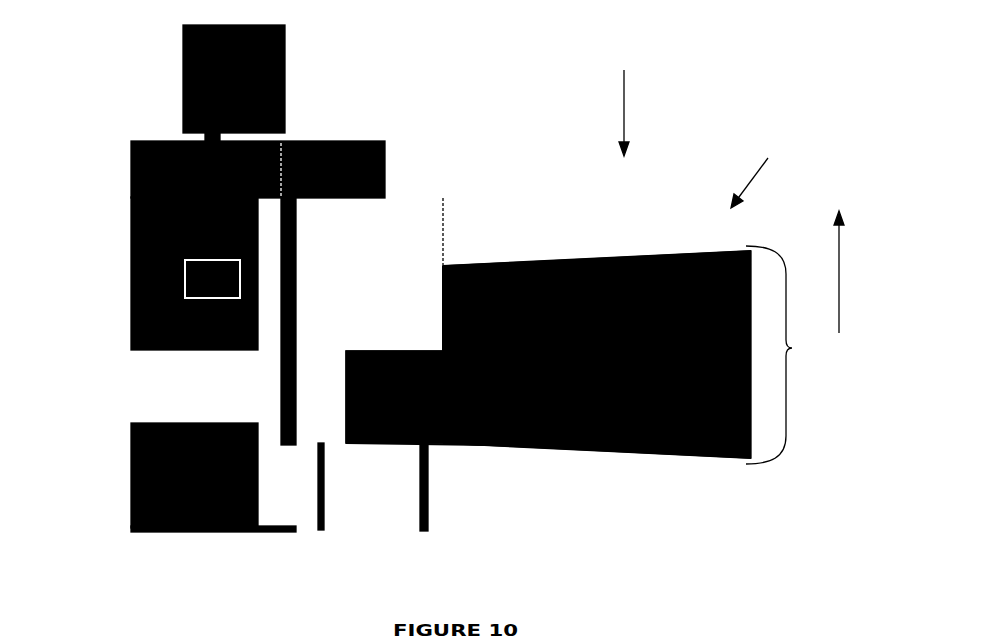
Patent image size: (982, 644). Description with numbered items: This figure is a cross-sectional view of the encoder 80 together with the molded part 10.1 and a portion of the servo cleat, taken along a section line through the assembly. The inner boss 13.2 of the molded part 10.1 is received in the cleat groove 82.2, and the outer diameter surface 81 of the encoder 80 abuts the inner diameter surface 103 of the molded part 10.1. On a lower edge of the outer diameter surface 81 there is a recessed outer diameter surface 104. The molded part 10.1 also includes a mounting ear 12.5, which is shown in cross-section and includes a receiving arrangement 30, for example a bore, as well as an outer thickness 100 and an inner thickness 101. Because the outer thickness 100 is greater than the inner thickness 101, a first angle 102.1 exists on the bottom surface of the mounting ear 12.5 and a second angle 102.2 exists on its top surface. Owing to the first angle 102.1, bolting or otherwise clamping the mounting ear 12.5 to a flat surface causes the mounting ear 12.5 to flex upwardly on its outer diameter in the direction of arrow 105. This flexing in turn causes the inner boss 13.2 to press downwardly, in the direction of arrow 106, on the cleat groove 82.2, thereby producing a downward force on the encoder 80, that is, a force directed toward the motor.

The encoder 80 is at (100, 111).
The inner thickness 101 is at (435, 282).
The outer diameter surface 81 is at (437, 220).
The mounting ear 12.5 is at (619, 101).
The molded part 10.1 is at (763, 170).
The second angle 102.2 is at (510, 255).
The inner diameter surface 103 is at (430, 318).
The arrow 105 is at (831, 273).
The outer thickness 100 is at (784, 340).
The cleat groove 82.2 is at (338, 374).
The arrow 106 is at (338, 437).
The recessed outer diameter surface 104 is at (416, 483).
The inner boss 13.2 is at (435, 435).
The first angle 102.1 is at (515, 437).
The receiving arrangement 30 is at (672, 447).